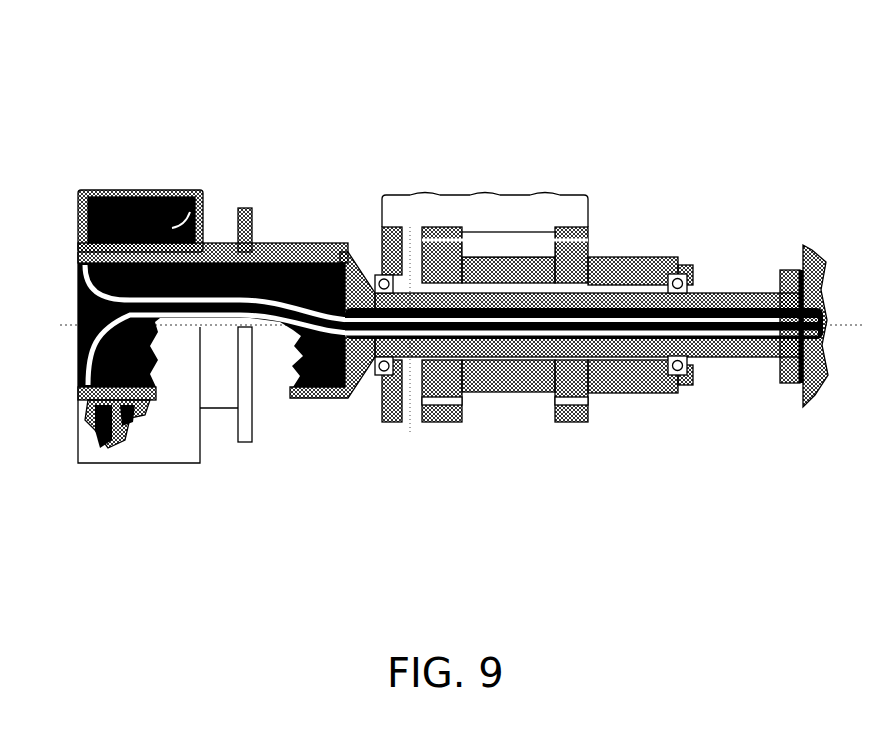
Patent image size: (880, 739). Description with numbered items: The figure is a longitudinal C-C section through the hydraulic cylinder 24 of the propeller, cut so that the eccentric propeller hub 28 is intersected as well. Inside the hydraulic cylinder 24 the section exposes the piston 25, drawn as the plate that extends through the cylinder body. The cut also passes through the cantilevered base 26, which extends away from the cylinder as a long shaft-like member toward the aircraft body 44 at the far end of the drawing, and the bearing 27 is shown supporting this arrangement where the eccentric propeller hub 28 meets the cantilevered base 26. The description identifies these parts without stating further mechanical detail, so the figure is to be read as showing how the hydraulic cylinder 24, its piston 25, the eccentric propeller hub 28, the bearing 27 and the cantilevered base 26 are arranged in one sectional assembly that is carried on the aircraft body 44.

The hydraulic cylinder 24 is at (110, 190).
The piston 25 is at (237, 208).
The cantilevered base 26 is at (740, 358).
The bearing 27 is at (375, 276).
The eccentric propeller hub 28 is at (380, 418).
The aircraft body 44 is at (808, 262).